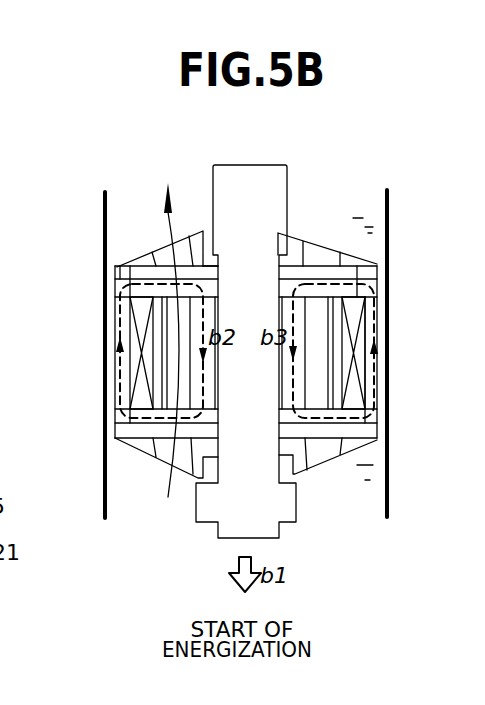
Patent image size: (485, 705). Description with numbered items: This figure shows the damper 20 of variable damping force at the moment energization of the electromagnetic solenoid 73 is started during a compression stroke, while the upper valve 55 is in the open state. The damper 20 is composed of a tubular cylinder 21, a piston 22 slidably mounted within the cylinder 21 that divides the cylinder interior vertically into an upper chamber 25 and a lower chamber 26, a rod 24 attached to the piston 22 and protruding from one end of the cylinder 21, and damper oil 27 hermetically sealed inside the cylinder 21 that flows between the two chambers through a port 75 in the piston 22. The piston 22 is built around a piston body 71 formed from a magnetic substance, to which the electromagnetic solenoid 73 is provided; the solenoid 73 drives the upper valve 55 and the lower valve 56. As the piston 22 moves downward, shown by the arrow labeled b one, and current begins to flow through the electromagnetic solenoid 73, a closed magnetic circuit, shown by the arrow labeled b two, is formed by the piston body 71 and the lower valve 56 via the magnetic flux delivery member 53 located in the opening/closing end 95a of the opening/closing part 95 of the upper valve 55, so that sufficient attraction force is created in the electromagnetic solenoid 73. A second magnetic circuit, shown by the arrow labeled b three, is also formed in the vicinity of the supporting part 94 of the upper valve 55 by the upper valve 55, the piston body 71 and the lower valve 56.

The damper of variable damping force 20 is at (114, 100).
The tubular cylinder 21 is at (393, 294).
The piston 22 is at (120, 218).
The rod 24 is at (304, 177).
The upper chamber 25 is at (110, 245).
The lower chamber 26 is at (128, 480).
The damper oil 27 is at (376, 212).
The magnetic flux delivery member 53 is at (112, 267).
The upper valve 55 is at (346, 276).
The lower valve 56 is at (348, 438).
The piston body 71 is at (118, 398).
The electromagnetic solenoid 73 is at (120, 320).
The port 75 is at (170, 355).
The supporting part 94 is at (374, 266).
The opening/closing part 95 is at (202, 270).
The opening/closing end 95a is at (120, 279).